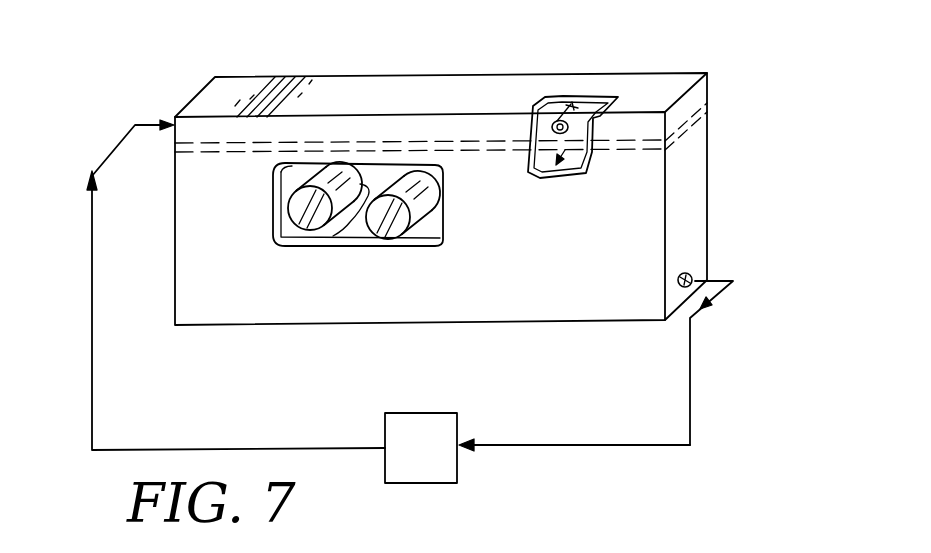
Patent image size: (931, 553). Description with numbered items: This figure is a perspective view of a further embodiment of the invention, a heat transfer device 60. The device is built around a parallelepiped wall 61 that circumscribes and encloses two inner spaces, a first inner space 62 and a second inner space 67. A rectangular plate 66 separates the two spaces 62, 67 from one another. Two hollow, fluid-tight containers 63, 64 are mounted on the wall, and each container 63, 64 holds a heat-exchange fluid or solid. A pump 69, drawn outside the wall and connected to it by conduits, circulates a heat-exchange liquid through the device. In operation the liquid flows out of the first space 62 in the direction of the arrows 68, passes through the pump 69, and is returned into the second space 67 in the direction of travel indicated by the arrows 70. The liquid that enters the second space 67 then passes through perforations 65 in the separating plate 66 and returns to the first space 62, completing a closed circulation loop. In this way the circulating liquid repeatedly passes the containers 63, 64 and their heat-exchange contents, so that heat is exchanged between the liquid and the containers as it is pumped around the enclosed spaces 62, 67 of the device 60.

The heat transfer device 60 is at (550, 33).
The parallelepiped wall 61 is at (396, 106).
The inner space 62 is at (326, 241).
The hollow fluid tight container 63 is at (285, 187).
The hollow fluid tight container 64 is at (424, 187).
The perforations 65 is at (547, 106).
The rectangular plate 66 is at (583, 120).
The inner space 67 is at (575, 106).
The arrows 68 is at (733, 281).
The pump 69 is at (441, 413).
The arrows 70 is at (90, 258).